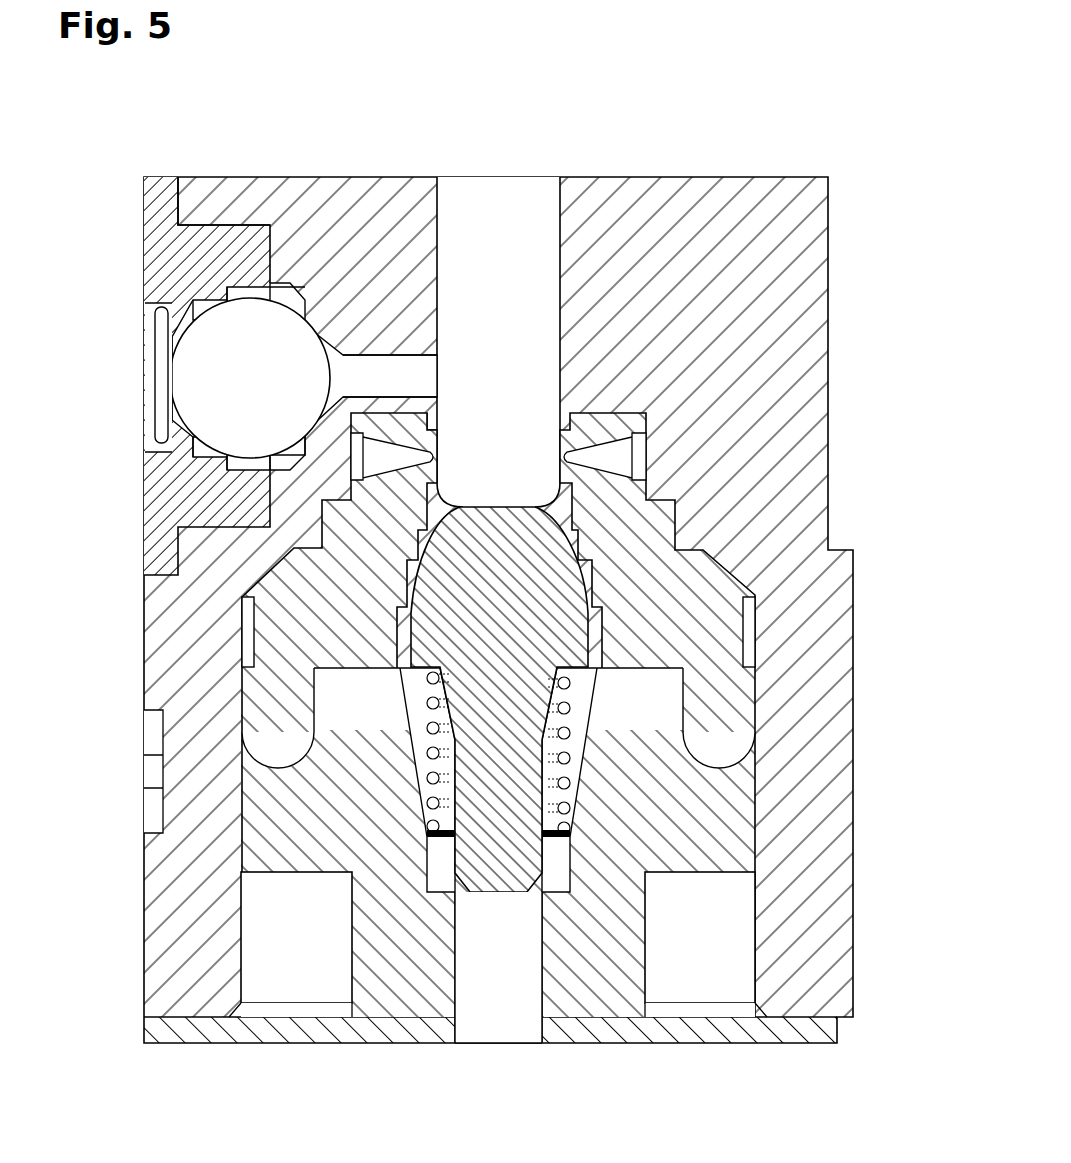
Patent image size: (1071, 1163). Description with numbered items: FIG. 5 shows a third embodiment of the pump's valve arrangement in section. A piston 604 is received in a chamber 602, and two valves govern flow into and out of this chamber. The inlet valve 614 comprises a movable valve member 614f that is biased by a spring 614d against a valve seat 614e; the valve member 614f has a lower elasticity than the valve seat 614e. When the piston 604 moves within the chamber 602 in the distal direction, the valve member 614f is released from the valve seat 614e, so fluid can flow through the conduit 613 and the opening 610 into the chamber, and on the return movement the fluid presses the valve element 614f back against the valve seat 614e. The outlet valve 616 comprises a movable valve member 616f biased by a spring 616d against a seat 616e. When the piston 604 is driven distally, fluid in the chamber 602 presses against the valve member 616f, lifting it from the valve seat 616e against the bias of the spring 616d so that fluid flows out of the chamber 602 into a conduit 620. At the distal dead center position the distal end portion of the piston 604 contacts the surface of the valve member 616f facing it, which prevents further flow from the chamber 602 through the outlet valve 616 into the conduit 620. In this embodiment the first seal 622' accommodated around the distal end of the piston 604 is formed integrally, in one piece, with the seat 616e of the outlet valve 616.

The chamber 602 is at (567, 250).
The piston 604 is at (503, 200).
The opening 610 is at (432, 380).
The conduit 613 is at (372, 372).
The inlet valve 614 is at (230, 337).
The spring 614d is at (158, 352).
The valve seat 614e is at (165, 205).
The valve member 614f is at (210, 395).
The outlet valve 616 is at (591, 720).
The spring 616d is at (567, 783).
The seat 616e is at (677, 577).
The valve member 616f is at (547, 632).
The conduit 620 is at (500, 1027).
The first seal 622' is at (649, 438).